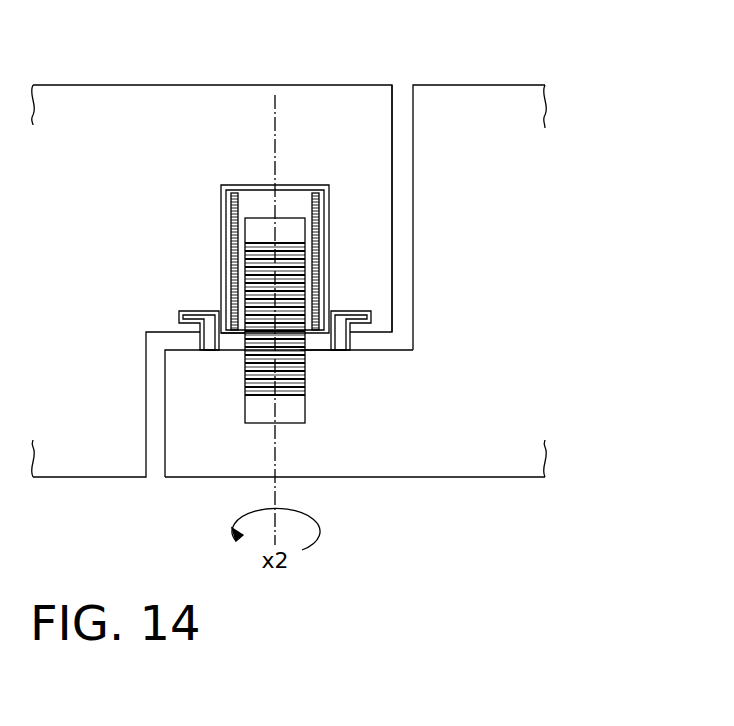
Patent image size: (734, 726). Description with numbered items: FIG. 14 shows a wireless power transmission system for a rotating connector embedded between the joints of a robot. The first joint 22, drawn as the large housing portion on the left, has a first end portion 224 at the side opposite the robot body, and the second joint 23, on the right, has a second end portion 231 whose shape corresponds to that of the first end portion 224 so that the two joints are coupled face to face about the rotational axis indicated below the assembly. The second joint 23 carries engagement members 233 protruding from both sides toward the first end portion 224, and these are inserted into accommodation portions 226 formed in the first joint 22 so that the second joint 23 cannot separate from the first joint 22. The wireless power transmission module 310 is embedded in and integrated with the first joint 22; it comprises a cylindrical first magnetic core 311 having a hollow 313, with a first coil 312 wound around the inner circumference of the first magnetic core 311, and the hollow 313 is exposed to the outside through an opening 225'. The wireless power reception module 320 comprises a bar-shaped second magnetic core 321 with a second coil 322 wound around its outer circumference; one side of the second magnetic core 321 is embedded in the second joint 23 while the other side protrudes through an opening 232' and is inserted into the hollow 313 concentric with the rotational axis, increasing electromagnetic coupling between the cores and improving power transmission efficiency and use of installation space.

The first joint 22 is at (83, 102).
The first end portion 224 is at (358, 82).
The second joint 23 is at (509, 102).
The second end portion 231 is at (201, 478).
The opening 232' is at (367, 362).
The accommodation portion 226 is at (186, 312).
The engagement member 233 is at (188, 318).
The opening 225' is at (214, 371).
The wireless power transmission module 310 is at (234, 222).
The first magnetic core 311 is at (262, 188).
The hollow 313 is at (297, 201).
The first coil 312 is at (236, 220).
The wireless power reception module 320 is at (302, 340).
The second magnetic core 321 is at (254, 411).
The second coil 322 is at (304, 384).